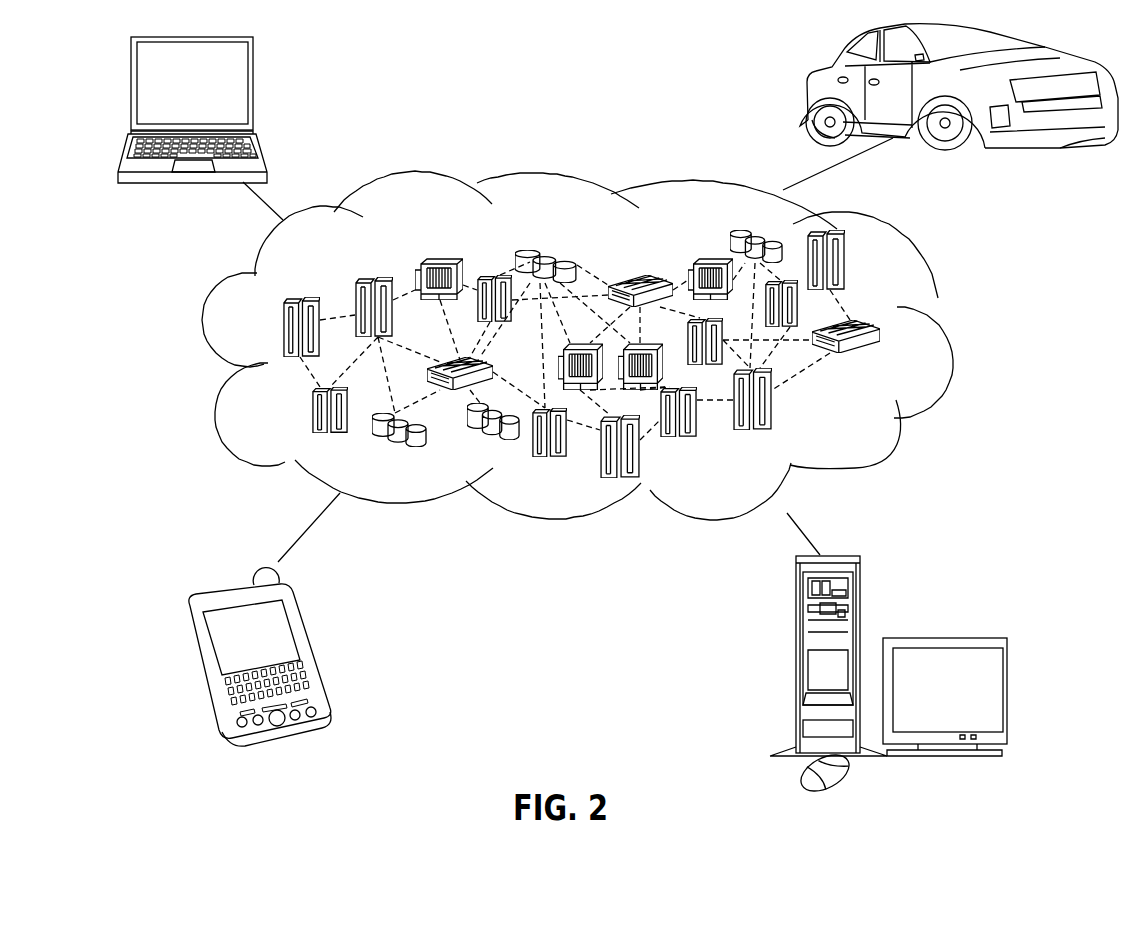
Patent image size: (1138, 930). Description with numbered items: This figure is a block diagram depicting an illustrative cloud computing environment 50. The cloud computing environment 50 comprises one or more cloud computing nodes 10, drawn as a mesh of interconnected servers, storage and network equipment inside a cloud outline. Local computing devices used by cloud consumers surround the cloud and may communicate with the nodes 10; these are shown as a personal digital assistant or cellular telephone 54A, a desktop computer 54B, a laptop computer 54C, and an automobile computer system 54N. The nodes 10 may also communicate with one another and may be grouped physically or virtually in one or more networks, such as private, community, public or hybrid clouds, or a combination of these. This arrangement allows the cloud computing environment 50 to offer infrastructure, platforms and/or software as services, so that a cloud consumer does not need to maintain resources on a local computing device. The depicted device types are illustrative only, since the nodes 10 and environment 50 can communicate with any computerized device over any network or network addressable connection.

The cloud computing environment 50 is at (940, 337).
The cloud computing nodes 10 is at (863, 425).
The personal digital assistant (PDA) or cellular telephone 54A is at (302, 622).
The desktop computer 54B is at (794, 607).
The laptop computer 54C is at (255, 69).
The automobile computer system 54N is at (812, 84).